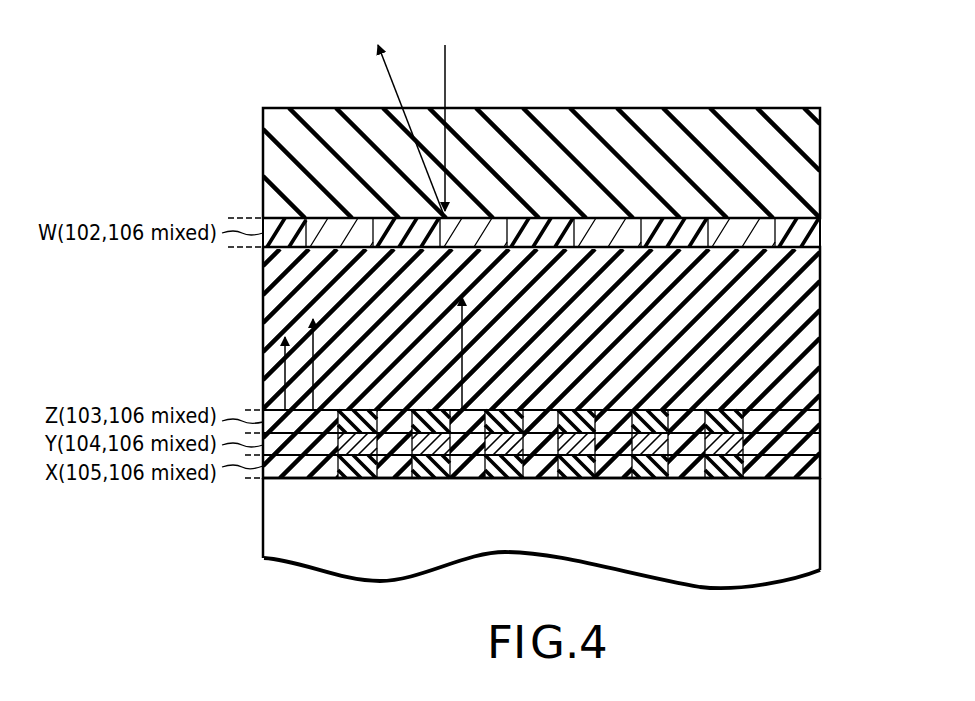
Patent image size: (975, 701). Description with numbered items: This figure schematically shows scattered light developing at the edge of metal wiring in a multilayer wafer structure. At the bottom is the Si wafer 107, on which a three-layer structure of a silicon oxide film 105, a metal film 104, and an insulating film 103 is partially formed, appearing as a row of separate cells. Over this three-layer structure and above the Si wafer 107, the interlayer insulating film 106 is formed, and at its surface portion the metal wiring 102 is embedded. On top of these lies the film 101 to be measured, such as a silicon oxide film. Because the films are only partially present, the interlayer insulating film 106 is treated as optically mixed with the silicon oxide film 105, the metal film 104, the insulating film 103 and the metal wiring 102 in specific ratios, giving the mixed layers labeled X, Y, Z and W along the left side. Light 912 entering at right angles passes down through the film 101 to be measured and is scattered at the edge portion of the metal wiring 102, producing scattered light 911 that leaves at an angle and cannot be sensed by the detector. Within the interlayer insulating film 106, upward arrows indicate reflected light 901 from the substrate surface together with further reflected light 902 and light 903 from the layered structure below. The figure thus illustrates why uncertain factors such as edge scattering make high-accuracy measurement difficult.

The film to be measured 101 is at (820, 143).
The metal wiring 102 is at (745, 220).
The insulating film 103 is at (760, 410).
The metal film 104 is at (747, 447).
The silicon oxide film 105 is at (752, 478).
The interlayer insulating film 106 is at (820, 292).
The Si wafer 107 is at (805, 546).
The reflected light from the substrate surface 901 is at (285, 372).
The light emission arrow 902 is at (313, 354).
The light emission arrow 903 is at (462, 352).
The scattered light 911 is at (390, 78).
The incident light 912 is at (447, 72).